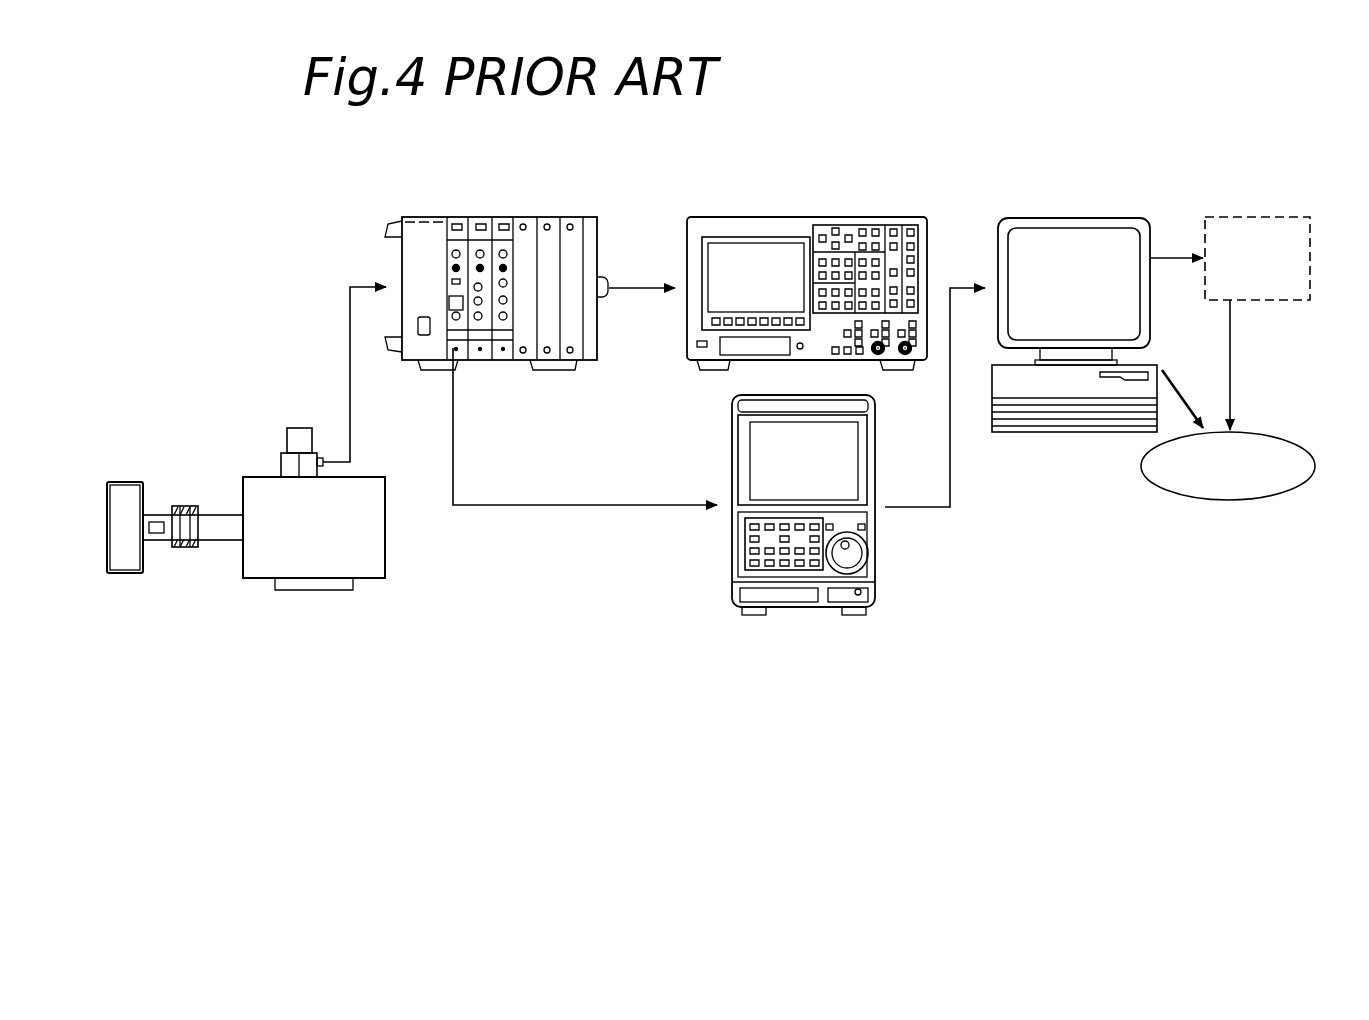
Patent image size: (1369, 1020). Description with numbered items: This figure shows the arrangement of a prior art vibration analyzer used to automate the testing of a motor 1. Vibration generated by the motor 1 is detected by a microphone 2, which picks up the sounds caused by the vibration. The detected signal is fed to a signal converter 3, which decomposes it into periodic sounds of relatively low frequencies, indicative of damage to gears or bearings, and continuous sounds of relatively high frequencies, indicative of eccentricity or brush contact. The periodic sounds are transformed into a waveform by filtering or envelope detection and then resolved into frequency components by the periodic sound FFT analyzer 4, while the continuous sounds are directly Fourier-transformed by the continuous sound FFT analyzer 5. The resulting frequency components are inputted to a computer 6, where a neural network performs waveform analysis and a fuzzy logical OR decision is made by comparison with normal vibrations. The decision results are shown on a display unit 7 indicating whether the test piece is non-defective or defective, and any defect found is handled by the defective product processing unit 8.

The motor 1 is at (385, 551).
The microphone 2 is at (300, 425).
The signal converter 3 is at (396, 248).
The periodic sound FFT analyzer 4 is at (853, 217).
The continuous sound FFT analyzer 5 is at (876, 560).
The computer 6 is at (1075, 218).
The display unit 7 is at (1232, 500).
The processing unit 8 is at (1263, 217).